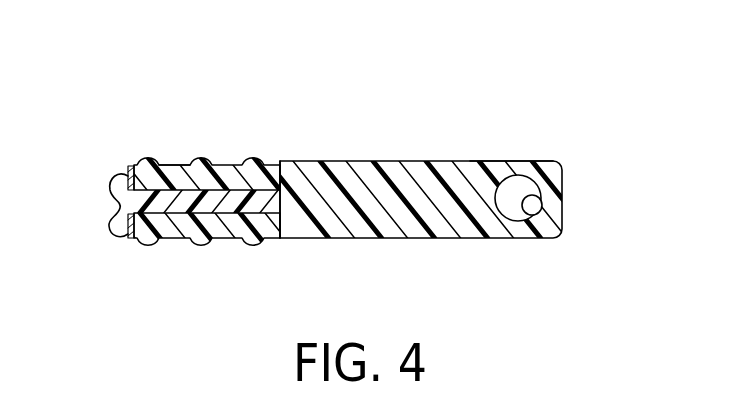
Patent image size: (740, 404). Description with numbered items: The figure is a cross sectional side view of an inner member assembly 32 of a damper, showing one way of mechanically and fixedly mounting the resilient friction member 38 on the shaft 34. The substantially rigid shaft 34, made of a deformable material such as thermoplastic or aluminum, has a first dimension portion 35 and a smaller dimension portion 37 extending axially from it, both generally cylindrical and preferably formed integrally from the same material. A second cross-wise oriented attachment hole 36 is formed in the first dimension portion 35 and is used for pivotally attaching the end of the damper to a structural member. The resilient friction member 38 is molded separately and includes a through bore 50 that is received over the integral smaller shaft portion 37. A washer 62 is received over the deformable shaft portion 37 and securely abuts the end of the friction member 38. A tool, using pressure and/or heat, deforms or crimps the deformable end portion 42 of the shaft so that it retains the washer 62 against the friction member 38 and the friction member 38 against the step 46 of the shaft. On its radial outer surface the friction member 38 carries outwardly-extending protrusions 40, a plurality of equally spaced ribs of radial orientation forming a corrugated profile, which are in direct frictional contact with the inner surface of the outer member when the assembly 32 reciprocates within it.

The inner member assembly 32 is at (362, 152).
The shaft 34 is at (496, 156).
The first dimension portion 35 is at (437, 209).
The second cross-wise oriented attachment hole 36 is at (543, 203).
The smaller dimension portion 37 is at (221, 201).
The resilient friction member 38 is at (220, 158).
The outwardly-extending protrusion 40 is at (164, 246).
The deformable end portion 42 is at (102, 230).
The step 46 is at (288, 162).
The through bore 50 is at (172, 168).
The washer 62 is at (120, 175).